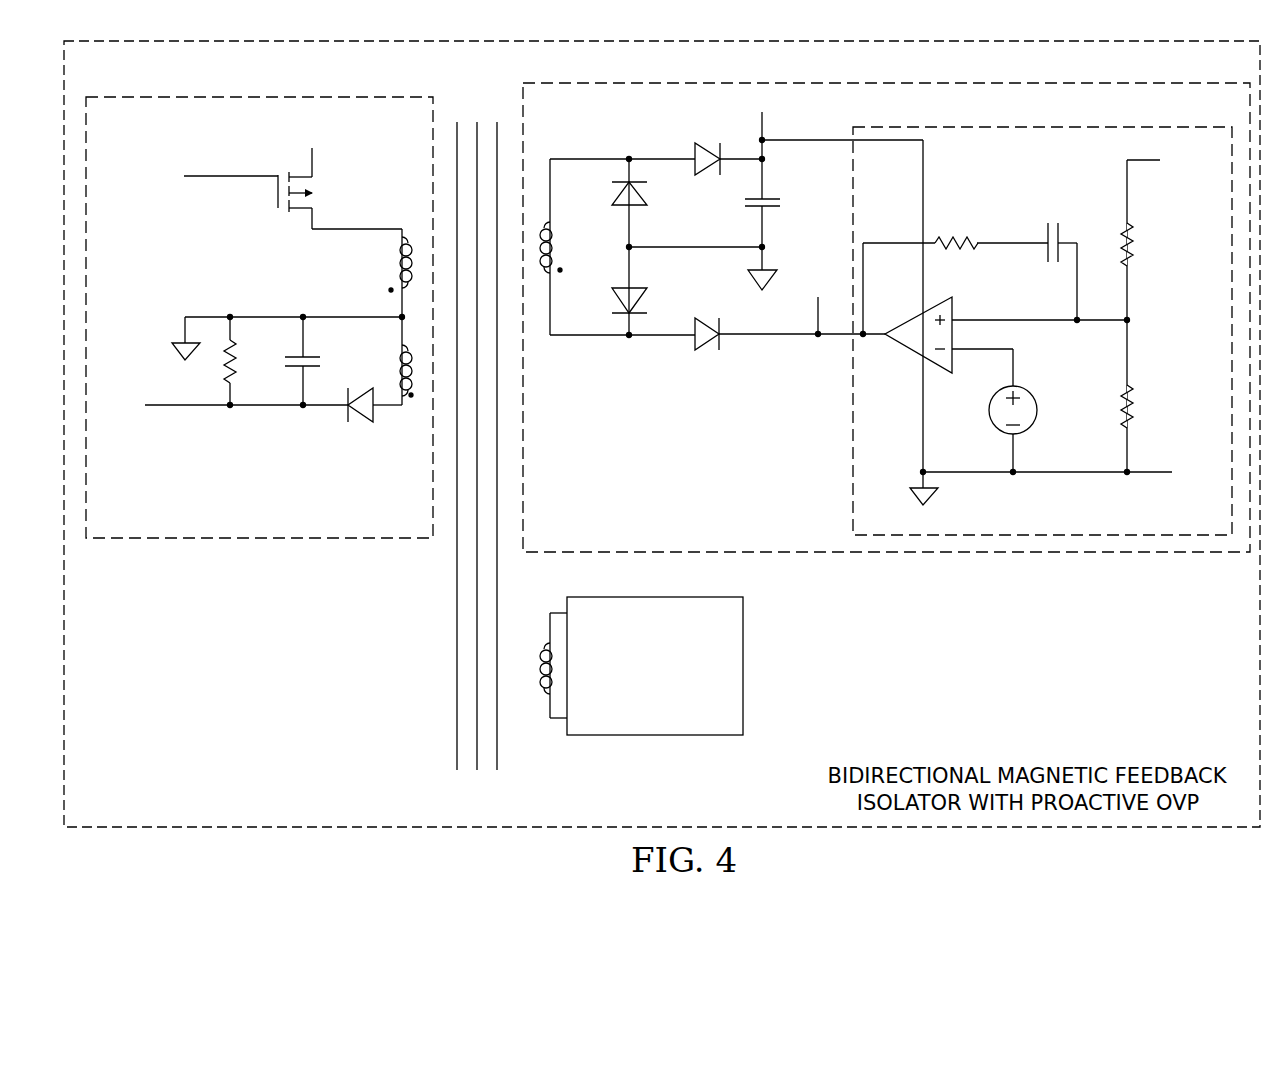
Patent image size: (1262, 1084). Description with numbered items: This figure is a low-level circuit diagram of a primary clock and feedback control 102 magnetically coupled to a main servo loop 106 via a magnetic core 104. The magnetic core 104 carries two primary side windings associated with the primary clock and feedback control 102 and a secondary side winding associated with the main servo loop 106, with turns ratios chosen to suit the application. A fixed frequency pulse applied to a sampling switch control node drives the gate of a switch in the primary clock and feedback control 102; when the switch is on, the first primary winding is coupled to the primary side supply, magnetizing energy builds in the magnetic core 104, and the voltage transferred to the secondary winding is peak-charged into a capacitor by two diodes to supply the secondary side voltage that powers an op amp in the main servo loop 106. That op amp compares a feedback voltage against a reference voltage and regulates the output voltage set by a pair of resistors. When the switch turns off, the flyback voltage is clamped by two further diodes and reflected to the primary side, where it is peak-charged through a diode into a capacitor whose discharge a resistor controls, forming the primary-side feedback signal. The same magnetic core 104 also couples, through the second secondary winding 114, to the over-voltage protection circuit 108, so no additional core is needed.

The primary clock and feedback control 102 is at (259, 97).
The magnetic core 104 is at (457, 653).
The main servo loop 106 is at (710, 83).
The over-voltage protection circuit 108 is at (743, 667).
The second secondary winding 114 is at (545, 643).